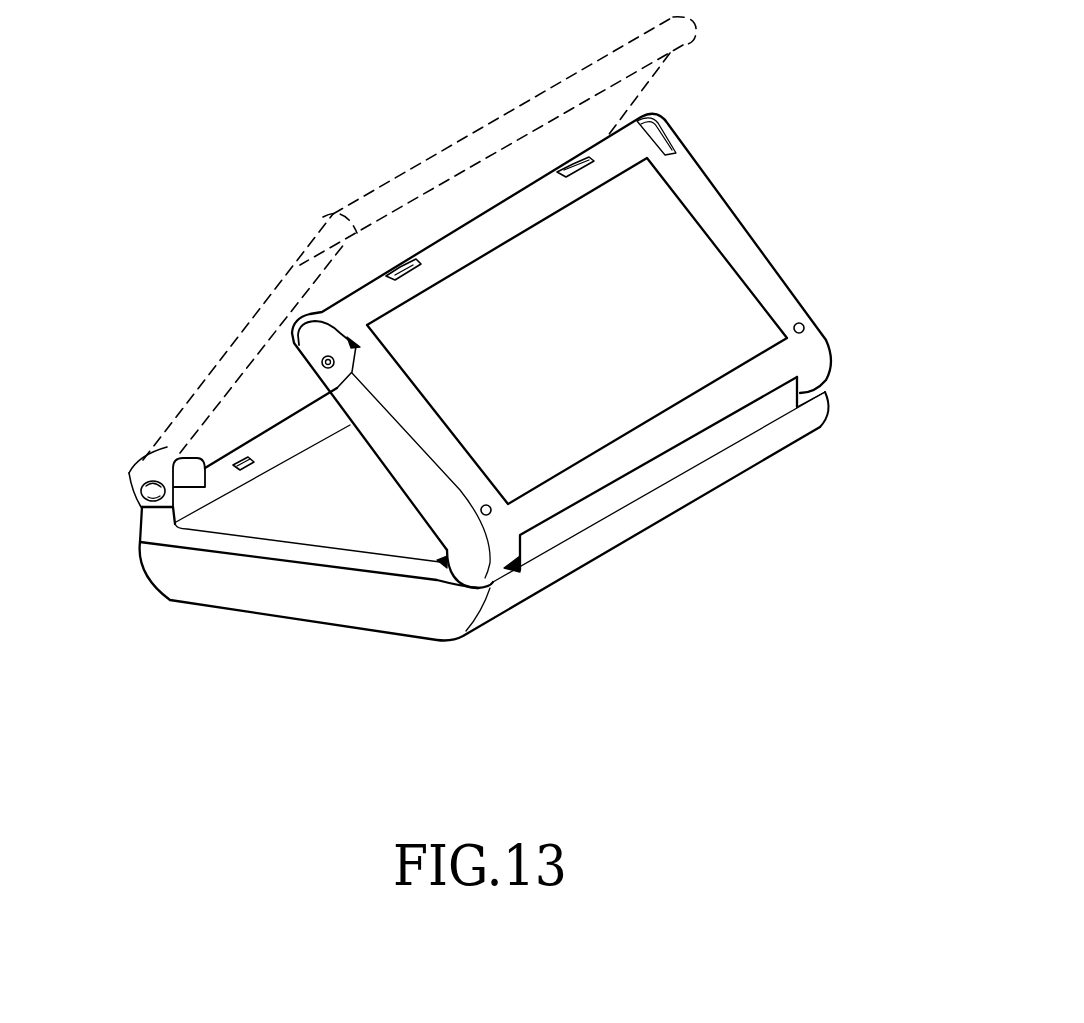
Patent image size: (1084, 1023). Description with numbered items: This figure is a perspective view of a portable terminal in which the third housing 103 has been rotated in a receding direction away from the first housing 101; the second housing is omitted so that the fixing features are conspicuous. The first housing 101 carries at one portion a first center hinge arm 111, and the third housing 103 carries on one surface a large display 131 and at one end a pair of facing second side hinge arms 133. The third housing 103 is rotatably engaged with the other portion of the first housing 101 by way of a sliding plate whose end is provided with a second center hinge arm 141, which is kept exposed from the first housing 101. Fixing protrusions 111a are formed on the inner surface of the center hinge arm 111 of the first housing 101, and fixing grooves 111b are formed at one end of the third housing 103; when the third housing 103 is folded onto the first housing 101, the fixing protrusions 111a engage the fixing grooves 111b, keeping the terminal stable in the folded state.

The first housing 101 is at (310, 629).
The third housing 103 is at (752, 222).
The first center hinge arm 111 is at (213, 457).
The fixing protrusions 111a is at (243, 467).
The fixing grooves 111b is at (571, 158).
The display 131 is at (717, 298).
The second side hinge arms 133 is at (505, 552).
The second center hinge arm 141 is at (672, 463).